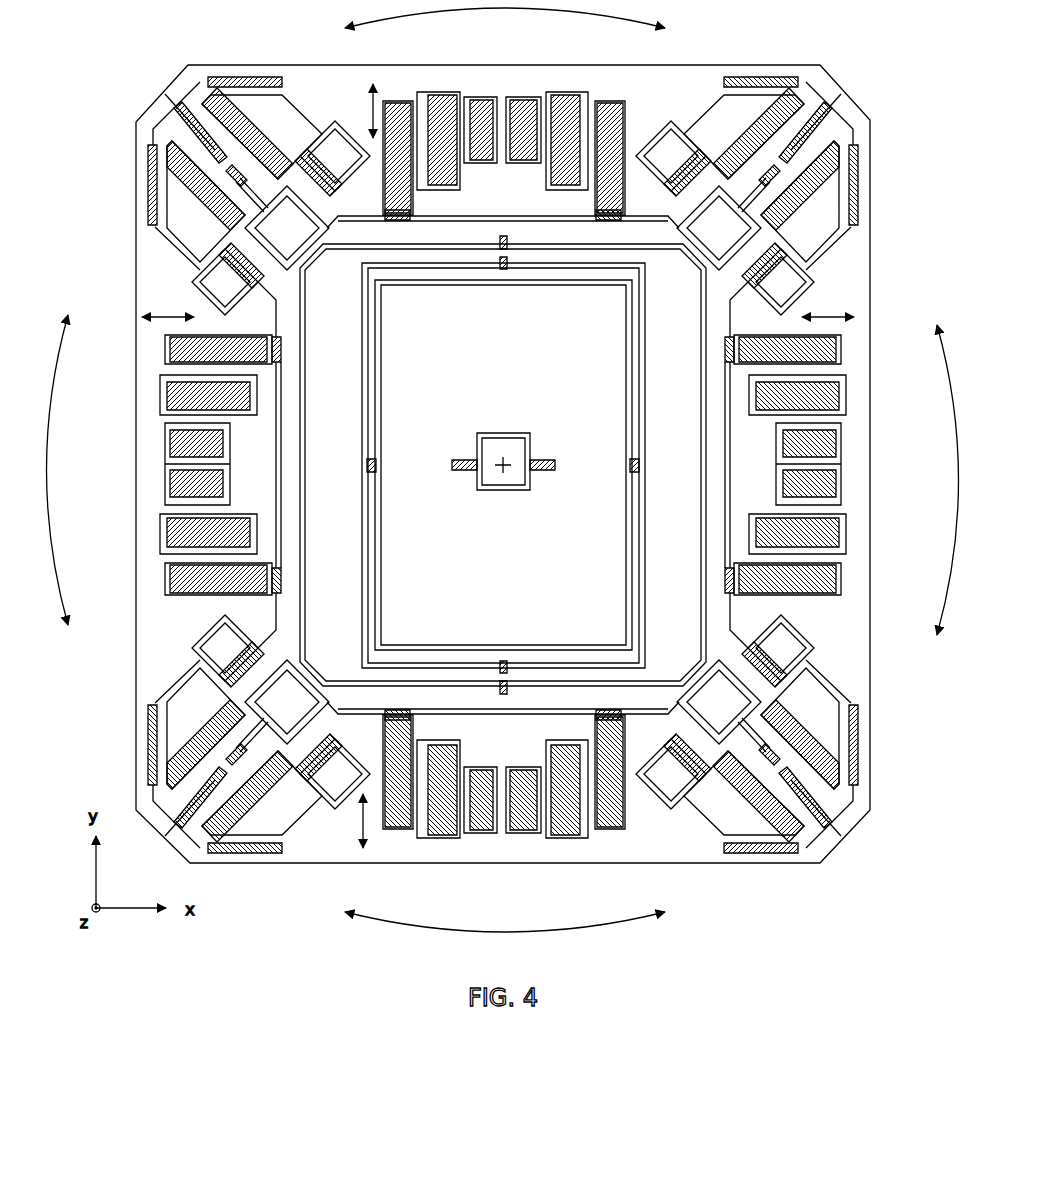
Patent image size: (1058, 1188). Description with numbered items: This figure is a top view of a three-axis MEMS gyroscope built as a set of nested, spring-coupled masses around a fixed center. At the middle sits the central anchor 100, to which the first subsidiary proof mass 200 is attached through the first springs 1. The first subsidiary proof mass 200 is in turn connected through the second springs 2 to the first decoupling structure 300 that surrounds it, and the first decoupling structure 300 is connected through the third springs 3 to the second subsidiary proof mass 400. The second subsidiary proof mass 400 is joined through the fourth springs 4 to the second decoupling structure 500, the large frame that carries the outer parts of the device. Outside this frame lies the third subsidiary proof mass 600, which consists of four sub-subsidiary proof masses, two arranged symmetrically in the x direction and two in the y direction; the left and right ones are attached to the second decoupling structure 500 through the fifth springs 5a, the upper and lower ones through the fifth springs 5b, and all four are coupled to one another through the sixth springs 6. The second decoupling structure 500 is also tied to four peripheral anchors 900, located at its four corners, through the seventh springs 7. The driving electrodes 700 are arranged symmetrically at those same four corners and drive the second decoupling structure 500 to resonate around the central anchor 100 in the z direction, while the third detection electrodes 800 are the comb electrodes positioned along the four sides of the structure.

The first spring 1 is at (502, 471).
The second spring 2 is at (503, 470).
The third spring 3 is at (502, 465).
The fourth spring 4 is at (502, 468).
The fifth spring 5a is at (500, 465).
The fifth spring 5b is at (503, 463).
The sixth spring 6 is at (503, 465).
The seventh spring 7 is at (503, 465).
The central anchor 100 is at (692, 888).
The first subsidiary proof mass 200 is at (613, 888).
The first decoupling structure 300 is at (455, 888).
The second subsidiary proof mass 400 is at (380, 888).
The second decoupling structure 500 is at (270, 888).
The third subsidiary proof mass 600 is at (503, 464).
The driving electrode 700 is at (503, 465).
The third detection electrode 800 is at (503, 465).
The peripheral anchor 900 is at (503, 465).